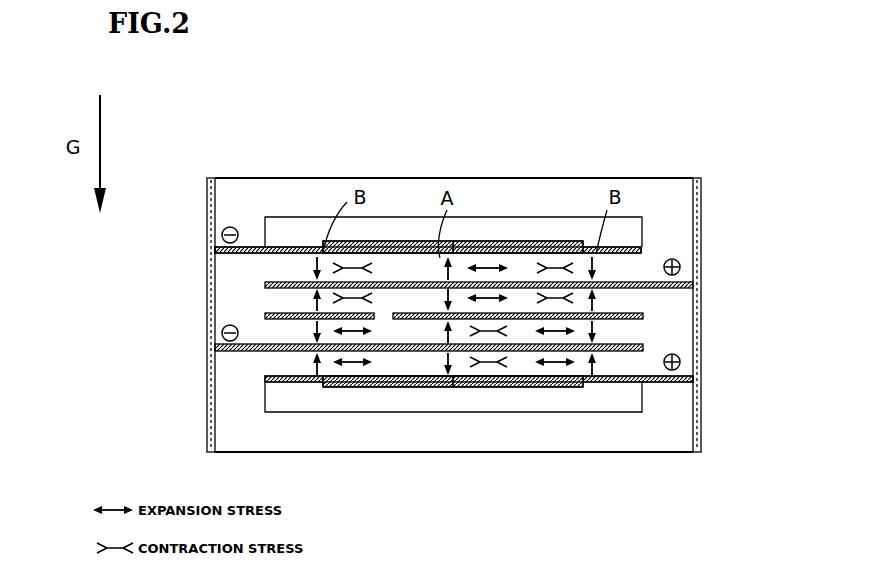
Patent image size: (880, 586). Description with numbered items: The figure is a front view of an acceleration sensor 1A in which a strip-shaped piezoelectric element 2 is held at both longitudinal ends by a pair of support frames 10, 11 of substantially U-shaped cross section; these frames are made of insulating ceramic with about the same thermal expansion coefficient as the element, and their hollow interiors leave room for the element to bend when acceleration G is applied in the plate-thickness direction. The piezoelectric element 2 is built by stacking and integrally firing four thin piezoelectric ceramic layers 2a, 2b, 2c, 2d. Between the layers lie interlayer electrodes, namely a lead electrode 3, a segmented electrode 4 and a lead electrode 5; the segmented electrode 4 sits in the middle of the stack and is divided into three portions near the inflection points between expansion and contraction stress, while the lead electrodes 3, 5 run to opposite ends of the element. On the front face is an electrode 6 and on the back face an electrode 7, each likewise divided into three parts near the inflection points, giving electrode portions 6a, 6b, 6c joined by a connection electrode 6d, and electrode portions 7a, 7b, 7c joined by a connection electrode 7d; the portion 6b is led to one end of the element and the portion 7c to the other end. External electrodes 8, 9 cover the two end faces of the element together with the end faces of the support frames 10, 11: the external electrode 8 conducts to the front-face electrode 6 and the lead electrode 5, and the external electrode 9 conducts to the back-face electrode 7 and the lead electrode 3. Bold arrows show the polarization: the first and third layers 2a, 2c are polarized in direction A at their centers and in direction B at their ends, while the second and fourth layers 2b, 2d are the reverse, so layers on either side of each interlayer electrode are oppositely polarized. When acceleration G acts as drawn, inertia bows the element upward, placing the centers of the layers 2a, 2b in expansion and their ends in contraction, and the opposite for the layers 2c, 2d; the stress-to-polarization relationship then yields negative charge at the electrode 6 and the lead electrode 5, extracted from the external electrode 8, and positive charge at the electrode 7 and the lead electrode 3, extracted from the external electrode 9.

The acceleration sensor 1A is at (712, 151).
The piezoelectric element 2 is at (152, 250).
The first piezoelectric layer 2a is at (282, 267).
The second piezoelectric layer 2b is at (278, 300).
The third piezoelectric layer 2c is at (277, 330).
The fourth piezoelectric layer 2d is at (257, 366).
The lead electrode 3 is at (680, 288).
The segmented electrode 4 is at (643, 313).
The lead electrode 5 is at (643, 345).
The front-face electrode 6 is at (347, 131).
The front-face electrode portion 6a is at (420, 241).
The front-face electrode portion 6b is at (300, 247).
The front-face electrode portion 6c is at (583, 241).
The connection electrode 6d is at (481, 241).
The back-face electrode 7 is at (558, 507).
The back-face electrode portion 7a is at (447, 387).
The back-face electrode portion 7b is at (314, 387).
The back-face electrode portion 7c is at (598, 387).
The connection electrode 7d is at (512, 387).
The external electrode 8 is at (207, 205).
The external electrode 9 is at (701, 208).
The support frame 10 is at (647, 188).
The support frame 11 is at (632, 445).